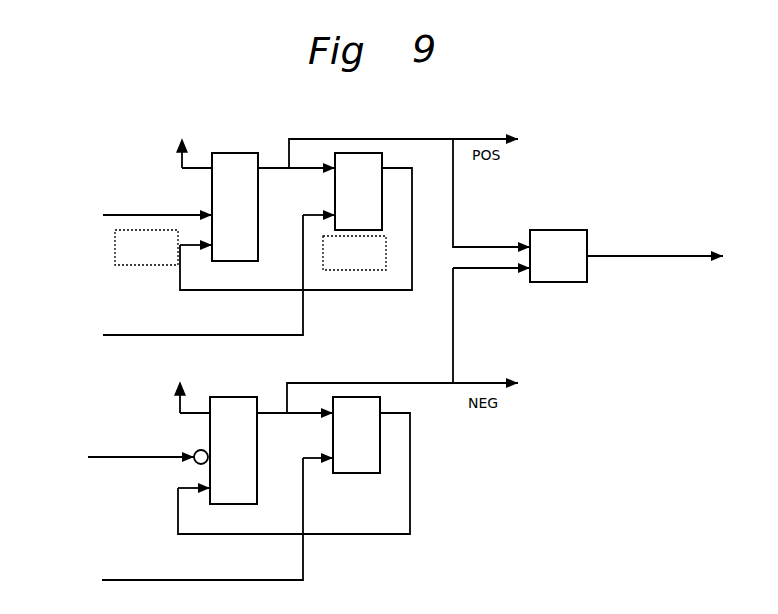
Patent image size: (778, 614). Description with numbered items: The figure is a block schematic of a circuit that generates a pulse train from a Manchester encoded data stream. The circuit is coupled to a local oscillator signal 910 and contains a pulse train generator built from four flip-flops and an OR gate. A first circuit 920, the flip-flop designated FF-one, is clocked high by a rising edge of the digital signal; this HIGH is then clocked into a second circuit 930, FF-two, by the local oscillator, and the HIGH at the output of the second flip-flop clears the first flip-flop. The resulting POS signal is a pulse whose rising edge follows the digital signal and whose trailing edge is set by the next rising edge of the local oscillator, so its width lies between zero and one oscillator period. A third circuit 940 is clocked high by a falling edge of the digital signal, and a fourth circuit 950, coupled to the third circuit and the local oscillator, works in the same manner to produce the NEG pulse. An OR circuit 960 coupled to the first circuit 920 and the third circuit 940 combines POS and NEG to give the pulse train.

The local oscillator signal 910 is at (140, 314).
The first circuit 920 is at (243, 151).
The second circuit 930 is at (350, 192).
The third circuit 940 is at (240, 367).
The fourth circuit 950 is at (345, 434).
The OR circuit 960 is at (583, 195).